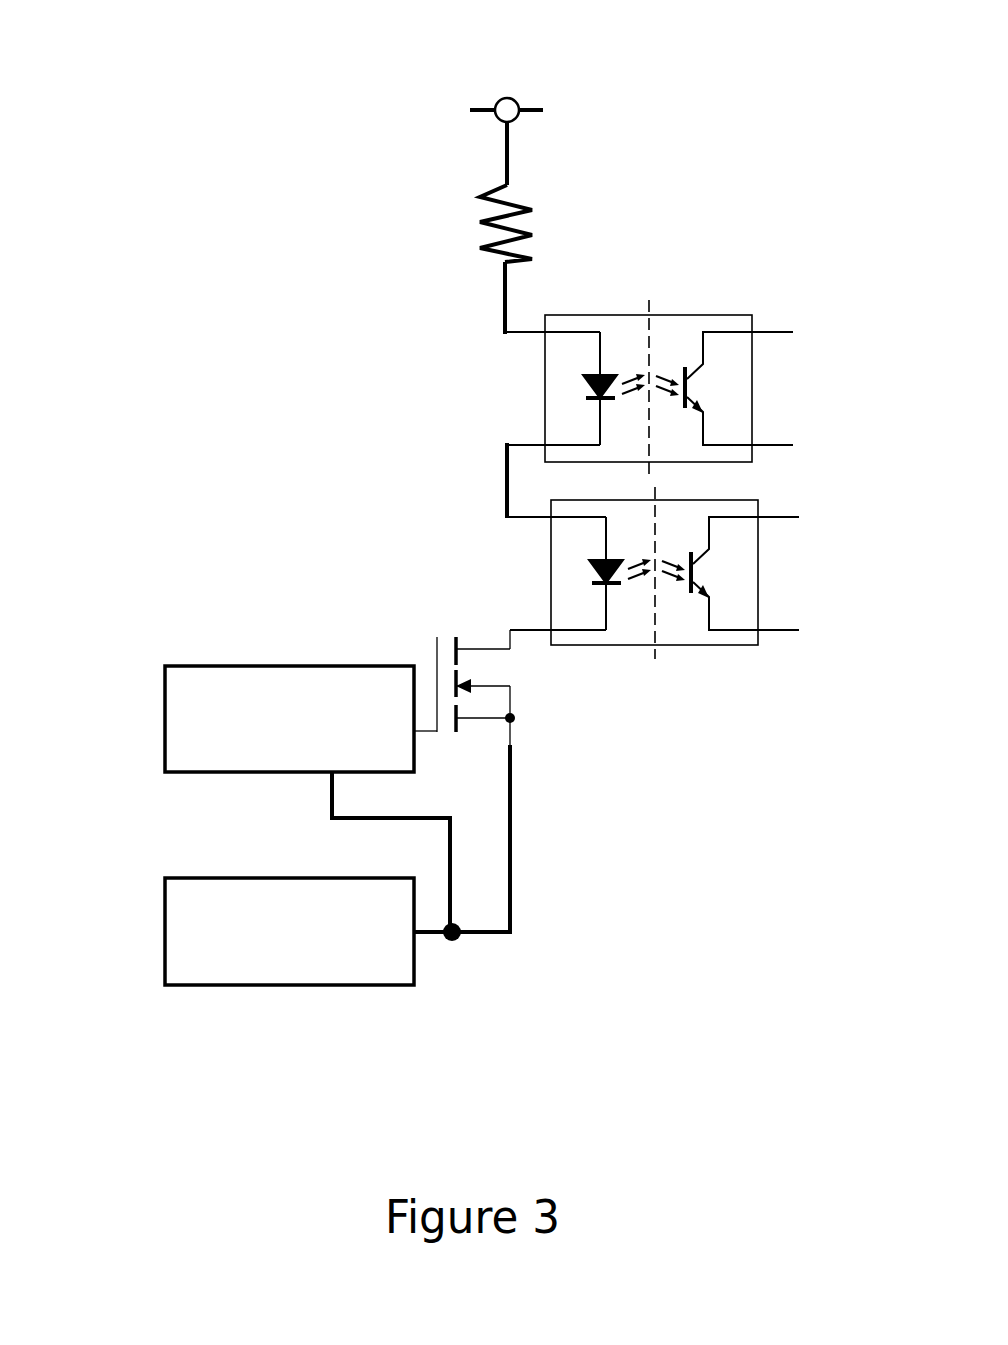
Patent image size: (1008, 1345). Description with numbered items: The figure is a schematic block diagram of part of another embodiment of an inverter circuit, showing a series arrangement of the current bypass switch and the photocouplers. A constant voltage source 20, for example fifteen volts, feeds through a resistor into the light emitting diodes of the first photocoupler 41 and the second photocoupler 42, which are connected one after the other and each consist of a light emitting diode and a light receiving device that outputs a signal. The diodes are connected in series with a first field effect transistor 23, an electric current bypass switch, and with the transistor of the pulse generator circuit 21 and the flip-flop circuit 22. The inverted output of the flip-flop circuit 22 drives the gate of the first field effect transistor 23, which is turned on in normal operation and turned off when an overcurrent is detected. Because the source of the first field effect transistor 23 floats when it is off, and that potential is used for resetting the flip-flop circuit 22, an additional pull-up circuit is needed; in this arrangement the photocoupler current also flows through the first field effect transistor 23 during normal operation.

The constant voltage source 20 is at (515, 98).
The first photocoupler 41 is at (732, 315).
The second photocoupler 42 is at (758, 505).
The first field effect transistor 23 is at (510, 695).
The flip-flop circuit 22 is at (164, 690).
The pulse generator circuit 21 is at (164, 917).